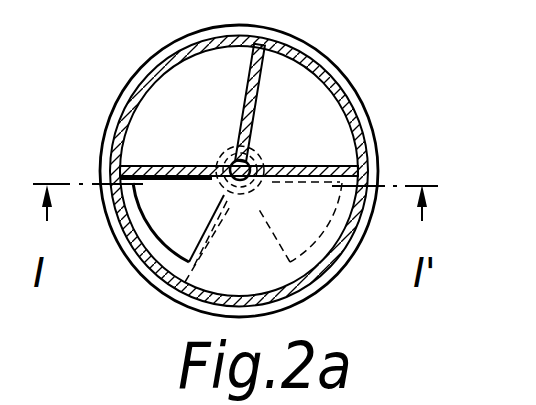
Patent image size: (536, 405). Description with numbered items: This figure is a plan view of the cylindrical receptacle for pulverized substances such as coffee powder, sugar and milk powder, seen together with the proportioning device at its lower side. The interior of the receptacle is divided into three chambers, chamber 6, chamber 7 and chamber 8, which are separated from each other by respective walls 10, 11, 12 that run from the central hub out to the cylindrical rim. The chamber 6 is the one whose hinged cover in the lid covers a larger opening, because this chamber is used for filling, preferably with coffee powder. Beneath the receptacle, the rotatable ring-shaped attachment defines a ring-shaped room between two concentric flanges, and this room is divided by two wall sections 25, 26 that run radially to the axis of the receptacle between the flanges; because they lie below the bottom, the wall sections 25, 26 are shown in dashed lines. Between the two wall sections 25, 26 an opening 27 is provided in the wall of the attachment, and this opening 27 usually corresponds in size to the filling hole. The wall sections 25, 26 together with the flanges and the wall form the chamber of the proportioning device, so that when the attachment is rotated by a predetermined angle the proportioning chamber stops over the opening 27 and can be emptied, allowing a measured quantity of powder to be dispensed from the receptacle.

The chamber 6 is at (302, 225).
The chamber 7 is at (296, 108).
The chamber 8 is at (211, 96).
The wall 10 is at (325, 168).
The wall 11 is at (258, 67).
The wall 12 is at (132, 172).
The wall section 25 is at (212, 228).
The wall section 26 is at (172, 186).
The opening 27 is at (190, 224).